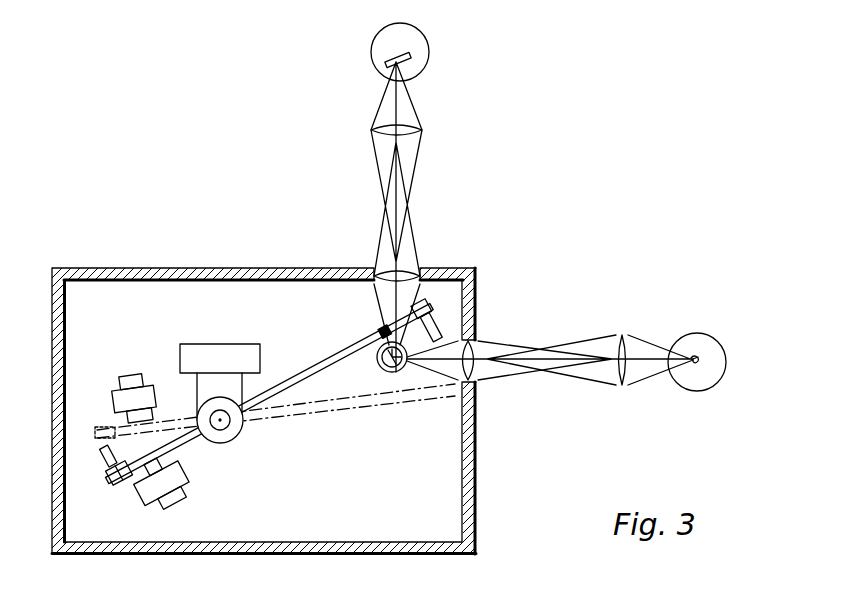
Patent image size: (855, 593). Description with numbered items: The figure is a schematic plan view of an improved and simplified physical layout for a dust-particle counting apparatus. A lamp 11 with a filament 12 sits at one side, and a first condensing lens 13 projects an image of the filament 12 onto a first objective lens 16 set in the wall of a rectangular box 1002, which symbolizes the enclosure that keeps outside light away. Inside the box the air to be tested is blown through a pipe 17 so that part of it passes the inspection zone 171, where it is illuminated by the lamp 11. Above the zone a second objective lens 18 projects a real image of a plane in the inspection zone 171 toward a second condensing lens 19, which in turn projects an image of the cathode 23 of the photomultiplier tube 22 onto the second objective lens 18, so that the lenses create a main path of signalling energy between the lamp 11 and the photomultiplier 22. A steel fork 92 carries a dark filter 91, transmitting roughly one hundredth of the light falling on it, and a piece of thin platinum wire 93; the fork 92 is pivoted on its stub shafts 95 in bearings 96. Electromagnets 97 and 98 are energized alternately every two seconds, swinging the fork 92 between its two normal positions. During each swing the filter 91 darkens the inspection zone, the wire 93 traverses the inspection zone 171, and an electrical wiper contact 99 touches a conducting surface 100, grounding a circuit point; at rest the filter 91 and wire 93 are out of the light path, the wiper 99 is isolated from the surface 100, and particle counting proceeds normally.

The lamp 11 is at (706, 336).
The filament 12 is at (698, 362).
The first condensing lens 13 is at (625, 380).
The first objective lens 16 is at (472, 380).
The pipe 17 is at (380, 377).
The inspection zone 171 is at (397, 373).
The second objective lens 18 is at (412, 268).
The second condensing lens 19 is at (420, 130).
The photomultiplier tube 22 is at (428, 42).
The cathode 23 is at (388, 62).
The dark filter 91 is at (438, 326).
The steel fork 92 is at (303, 380).
The platinum wire 93 is at (383, 330).
The stub shaft 95 is at (219, 410).
The bearing 96 is at (160, 386).
The electromagnet 97 is at (165, 505).
The electromagnet 98 is at (120, 384).
The electrical wiper contact 99 is at (112, 473).
The conducting surface 100 is at (100, 458).
The rectangular box 1002 is at (313, 558).